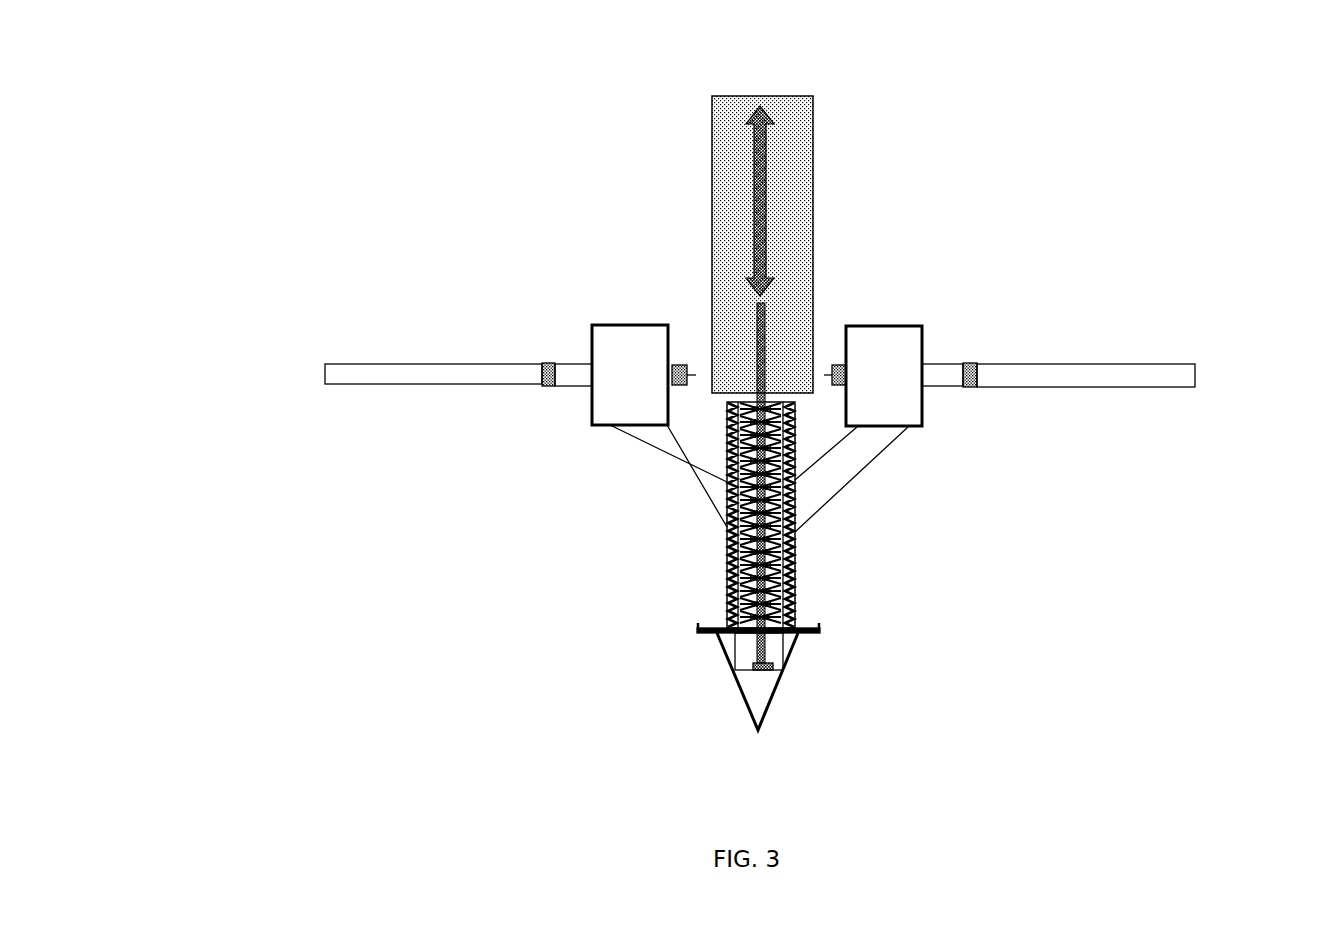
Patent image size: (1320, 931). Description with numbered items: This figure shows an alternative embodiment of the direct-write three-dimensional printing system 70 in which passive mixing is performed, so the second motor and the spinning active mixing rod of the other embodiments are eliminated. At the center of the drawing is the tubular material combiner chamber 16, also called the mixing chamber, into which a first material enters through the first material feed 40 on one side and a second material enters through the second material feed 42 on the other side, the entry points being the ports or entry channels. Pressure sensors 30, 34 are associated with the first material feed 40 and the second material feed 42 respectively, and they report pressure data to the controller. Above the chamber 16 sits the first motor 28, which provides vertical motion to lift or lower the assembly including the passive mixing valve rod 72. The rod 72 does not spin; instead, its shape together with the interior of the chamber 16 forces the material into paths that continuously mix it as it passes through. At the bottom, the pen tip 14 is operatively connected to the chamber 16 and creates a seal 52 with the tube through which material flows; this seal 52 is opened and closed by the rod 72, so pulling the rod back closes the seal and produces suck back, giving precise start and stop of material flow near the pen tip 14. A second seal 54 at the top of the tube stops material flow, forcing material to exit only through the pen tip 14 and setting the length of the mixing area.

The system 70 is at (478, 131).
The first motor 28 is at (812, 220).
The second seal 54 is at (752, 402).
The first material feed 40 is at (350, 363).
The second material feed 42 is at (1195, 364).
The pressure sensor 30 is at (546, 386).
The pressure sensor 34 is at (972, 388).
The passive mixing valve rod 72 is at (737, 558).
The material combiner chamber 16 is at (785, 583).
The seal 52 is at (747, 633).
The pen tip 14 is at (770, 710).